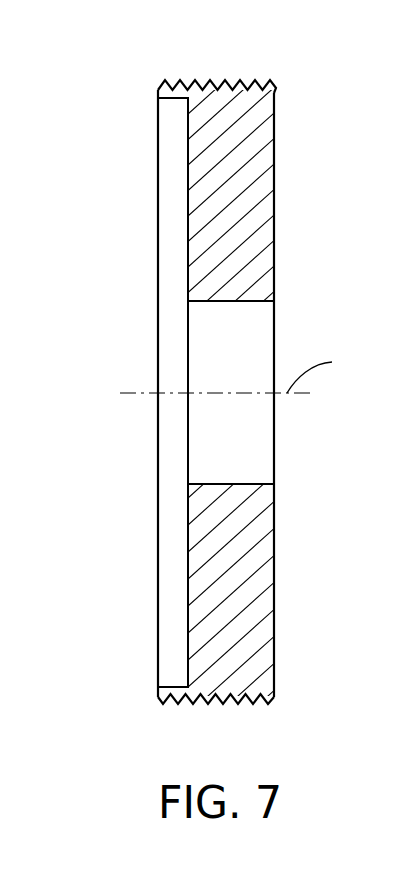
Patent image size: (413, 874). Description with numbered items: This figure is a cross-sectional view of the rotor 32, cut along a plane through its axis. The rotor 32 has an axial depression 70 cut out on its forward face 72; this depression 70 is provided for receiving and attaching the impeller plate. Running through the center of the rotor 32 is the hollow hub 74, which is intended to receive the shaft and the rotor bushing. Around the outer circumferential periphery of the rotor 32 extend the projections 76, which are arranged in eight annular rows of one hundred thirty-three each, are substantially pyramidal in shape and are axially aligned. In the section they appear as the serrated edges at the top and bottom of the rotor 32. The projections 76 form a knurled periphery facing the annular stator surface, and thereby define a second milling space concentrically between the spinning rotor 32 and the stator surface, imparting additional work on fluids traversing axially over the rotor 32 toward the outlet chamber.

The rotor 32 is at (296, 114).
The axial depression 70 is at (183, 100).
The forward face 72 is at (160, 615).
The hollow hub 74 is at (250, 484).
The projections 76 is at (263, 701).